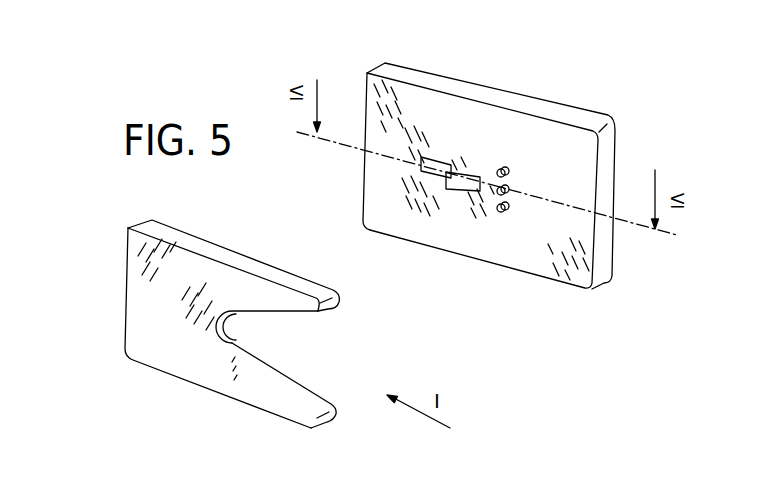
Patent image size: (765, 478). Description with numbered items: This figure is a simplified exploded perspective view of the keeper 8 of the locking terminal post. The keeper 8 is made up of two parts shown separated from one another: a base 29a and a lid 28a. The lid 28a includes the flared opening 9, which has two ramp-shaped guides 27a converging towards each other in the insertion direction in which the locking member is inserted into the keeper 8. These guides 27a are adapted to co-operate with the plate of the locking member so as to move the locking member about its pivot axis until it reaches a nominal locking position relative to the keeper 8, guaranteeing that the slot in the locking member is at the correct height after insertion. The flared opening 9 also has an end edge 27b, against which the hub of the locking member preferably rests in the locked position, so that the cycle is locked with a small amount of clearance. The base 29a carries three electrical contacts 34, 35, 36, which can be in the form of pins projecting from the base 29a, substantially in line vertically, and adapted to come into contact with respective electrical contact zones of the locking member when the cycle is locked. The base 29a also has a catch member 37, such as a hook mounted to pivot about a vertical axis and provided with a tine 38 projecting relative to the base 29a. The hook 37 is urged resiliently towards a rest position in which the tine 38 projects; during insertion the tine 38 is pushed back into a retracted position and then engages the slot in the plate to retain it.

The keeper 8 is at (98, 211).
The flared opening 9 is at (368, 330).
The ramp-shaped guides 27a is at (288, 377).
The end edge 27b is at (231, 345).
The lid 28a is at (148, 360).
The base 29a is at (562, 138).
The electrical contact 34 is at (507, 192).
The electrical contact 35 is at (504, 212).
The electrical contact 36 is at (508, 174).
The catch member 37 is at (440, 157).
The tine 38 is at (466, 175).